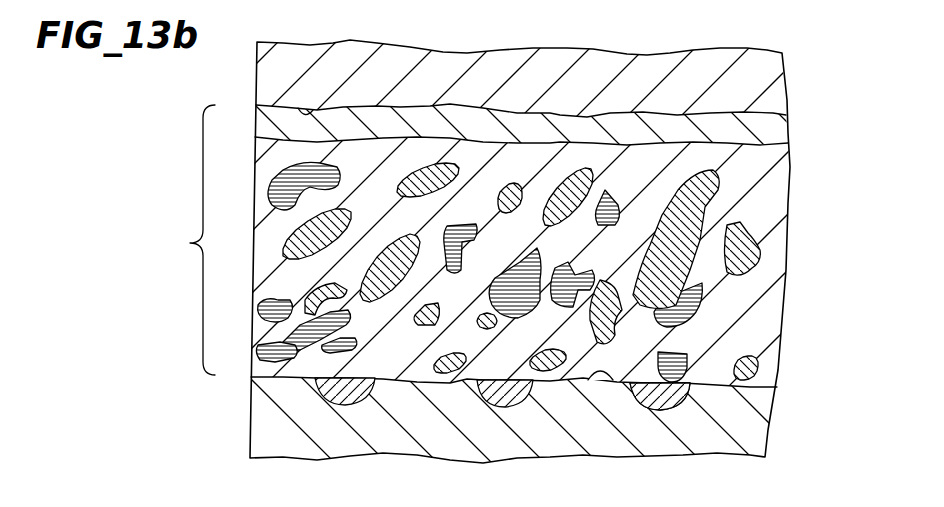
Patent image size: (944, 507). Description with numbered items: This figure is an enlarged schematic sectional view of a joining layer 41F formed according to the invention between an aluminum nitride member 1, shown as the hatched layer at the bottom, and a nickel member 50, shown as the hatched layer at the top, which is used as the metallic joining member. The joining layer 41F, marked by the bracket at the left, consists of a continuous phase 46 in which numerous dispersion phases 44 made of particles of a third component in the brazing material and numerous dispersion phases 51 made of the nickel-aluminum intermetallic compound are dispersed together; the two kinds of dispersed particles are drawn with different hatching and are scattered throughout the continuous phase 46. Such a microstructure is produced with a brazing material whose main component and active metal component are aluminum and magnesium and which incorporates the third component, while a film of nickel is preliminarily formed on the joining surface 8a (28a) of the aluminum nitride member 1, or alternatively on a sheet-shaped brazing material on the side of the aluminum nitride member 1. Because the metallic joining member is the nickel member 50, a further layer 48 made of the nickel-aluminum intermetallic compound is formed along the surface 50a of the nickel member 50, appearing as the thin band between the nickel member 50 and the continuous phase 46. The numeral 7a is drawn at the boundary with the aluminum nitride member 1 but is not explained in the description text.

The nickel member 50 is at (268, 75).
The surface of the nickel member 50a is at (317, 110).
The layer 48 is at (623, 127).
The continuous phase 46 is at (772, 200).
The dispersion phases 44 is at (330, 165).
The dispersion phases 51 is at (378, 258).
The joining layer 41F is at (179, 240).
The aluminum nitride member 1 is at (258, 410).
The surface projection 7a is at (355, 400).
The joining surface 8a is at (612, 380).
The joining surface 28a is at (661, 438).